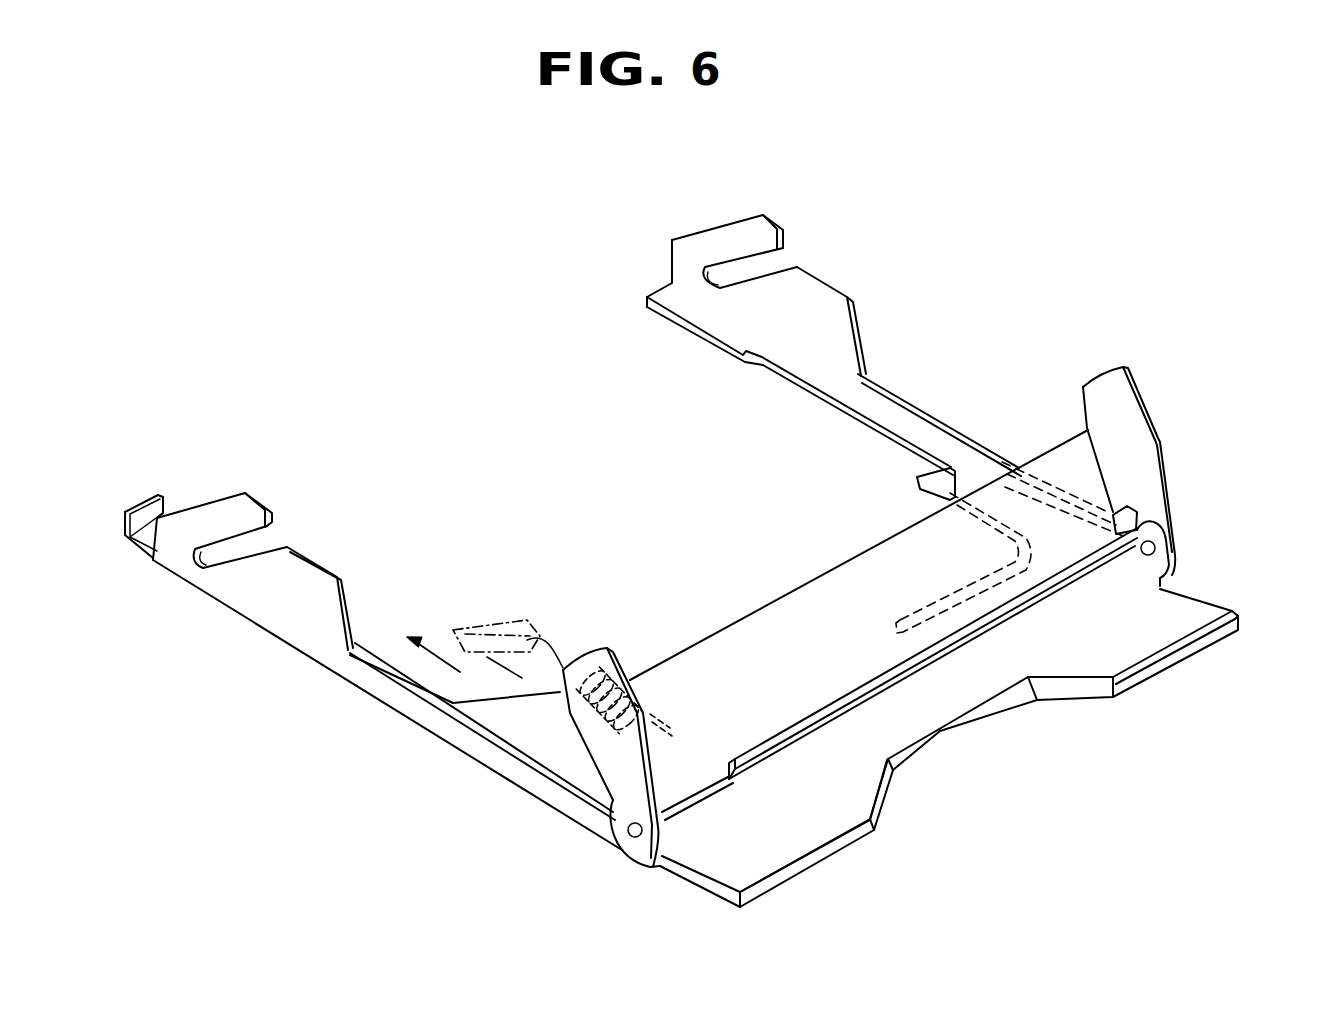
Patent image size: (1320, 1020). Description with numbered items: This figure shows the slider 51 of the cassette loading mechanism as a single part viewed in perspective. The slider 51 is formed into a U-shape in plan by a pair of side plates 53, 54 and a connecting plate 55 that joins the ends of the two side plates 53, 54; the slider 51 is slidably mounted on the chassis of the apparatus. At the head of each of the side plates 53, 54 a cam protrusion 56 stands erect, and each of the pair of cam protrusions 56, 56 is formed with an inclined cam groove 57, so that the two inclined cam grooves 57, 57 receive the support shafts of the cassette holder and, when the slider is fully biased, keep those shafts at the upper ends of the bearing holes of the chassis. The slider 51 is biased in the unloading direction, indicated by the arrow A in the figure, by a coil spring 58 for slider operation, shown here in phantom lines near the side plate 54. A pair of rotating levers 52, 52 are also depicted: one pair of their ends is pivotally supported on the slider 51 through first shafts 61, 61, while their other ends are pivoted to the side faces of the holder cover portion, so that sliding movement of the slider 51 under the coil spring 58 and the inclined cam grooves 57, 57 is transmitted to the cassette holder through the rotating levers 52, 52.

The slider 51 is at (938, 325).
The rotating levers 52 is at (620, 650).
The side plate 53 is at (933, 428).
The side plate 54 is at (390, 700).
The connecting plate 55 is at (853, 792).
The cam protrusions 56 is at (810, 300).
The inclined cam grooves 57 is at (777, 262).
The coil spring 58 is at (560, 673).
The first shafts 61 is at (630, 836).